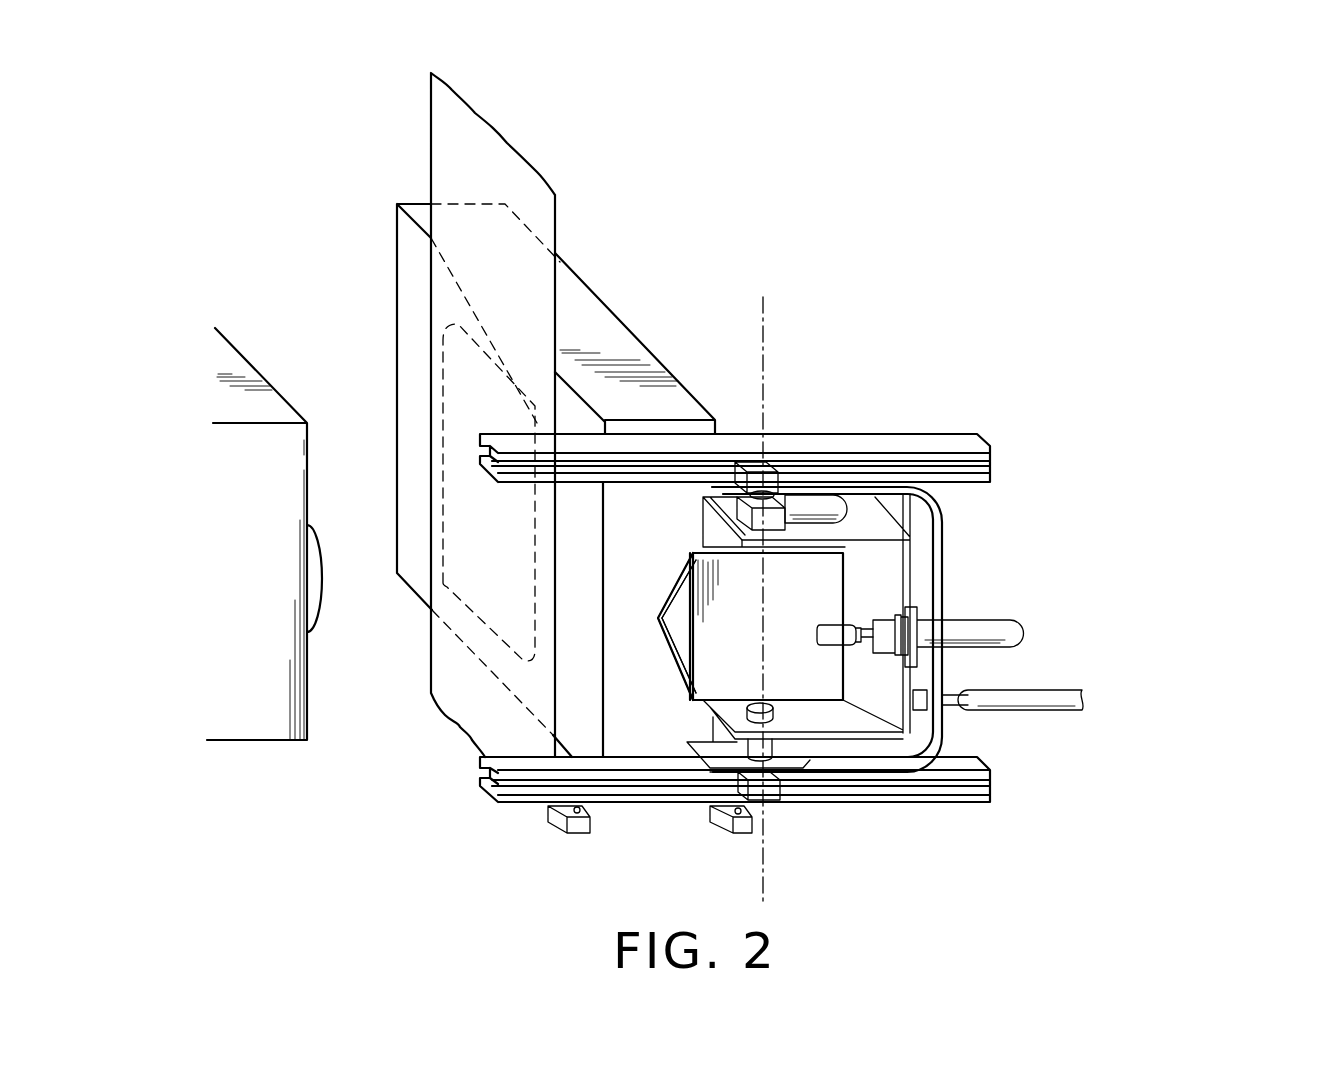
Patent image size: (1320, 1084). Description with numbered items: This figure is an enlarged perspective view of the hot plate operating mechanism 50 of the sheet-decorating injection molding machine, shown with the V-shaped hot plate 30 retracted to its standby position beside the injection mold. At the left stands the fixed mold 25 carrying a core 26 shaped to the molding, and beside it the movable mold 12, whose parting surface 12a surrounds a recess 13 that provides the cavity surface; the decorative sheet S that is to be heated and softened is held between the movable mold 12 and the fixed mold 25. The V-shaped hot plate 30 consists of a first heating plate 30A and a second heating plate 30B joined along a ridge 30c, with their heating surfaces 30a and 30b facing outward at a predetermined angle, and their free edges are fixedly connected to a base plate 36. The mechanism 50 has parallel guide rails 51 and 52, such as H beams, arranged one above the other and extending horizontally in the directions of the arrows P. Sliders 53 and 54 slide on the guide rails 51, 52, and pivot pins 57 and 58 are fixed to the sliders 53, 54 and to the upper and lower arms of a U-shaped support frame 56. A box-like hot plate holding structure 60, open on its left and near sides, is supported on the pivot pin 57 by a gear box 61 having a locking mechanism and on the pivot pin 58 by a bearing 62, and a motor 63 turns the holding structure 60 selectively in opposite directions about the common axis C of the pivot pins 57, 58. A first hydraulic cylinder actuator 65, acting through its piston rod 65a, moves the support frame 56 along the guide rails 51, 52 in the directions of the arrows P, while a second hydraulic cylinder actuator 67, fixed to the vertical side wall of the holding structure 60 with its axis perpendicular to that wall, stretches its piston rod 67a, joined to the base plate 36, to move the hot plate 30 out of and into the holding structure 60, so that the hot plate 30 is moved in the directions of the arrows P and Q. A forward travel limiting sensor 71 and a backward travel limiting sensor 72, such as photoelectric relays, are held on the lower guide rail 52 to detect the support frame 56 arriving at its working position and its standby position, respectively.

The movable mold 12 is at (600, 325).
The parting surface 12a is at (417, 262).
The recess 13 is at (487, 357).
The fixed mold 25 is at (266, 712).
The core 26 is at (317, 584).
The V-shaped hot plate 30 is at (655, 577).
The first heating plate 30A is at (660, 608).
The second heating plate 30B is at (670, 657).
The heating surface 30a is at (665, 576).
The heating surface 30b is at (664, 630).
The ridge 30c is at (675, 593).
The base plate 36 is at (828, 582).
The hot plate operating mechanism 50 is at (1052, 462).
The guide rail 51 is at (898, 443).
The guide rail 52 is at (890, 806).
The slider 53 is at (752, 463).
The slider 54 is at (774, 806).
The U-shaped support frame 56 is at (943, 545).
The pivot pin 57 is at (788, 495).
The pivot pin 58 is at (740, 782).
The hot plate holding structure 60 is at (877, 522).
The gear box 61 is at (703, 503).
The bearing 62 is at (773, 745).
The motor 63 is at (813, 500).
The first hydraulic cylinder actuator 65 is at (1050, 698).
The piston rod 65a is at (952, 710).
The second hydraulic cylinder actuator 67 is at (973, 630).
The piston rod 67a is at (857, 648).
The forward travel limiting sensor 71 is at (582, 830).
The backward travel limiting sensor 72 is at (738, 830).
The decorative sheet S is at (450, 122).
The center axis C is at (765, 586).
The arrows P is at (1118, 628).
The arrows Q is at (1230, 683).